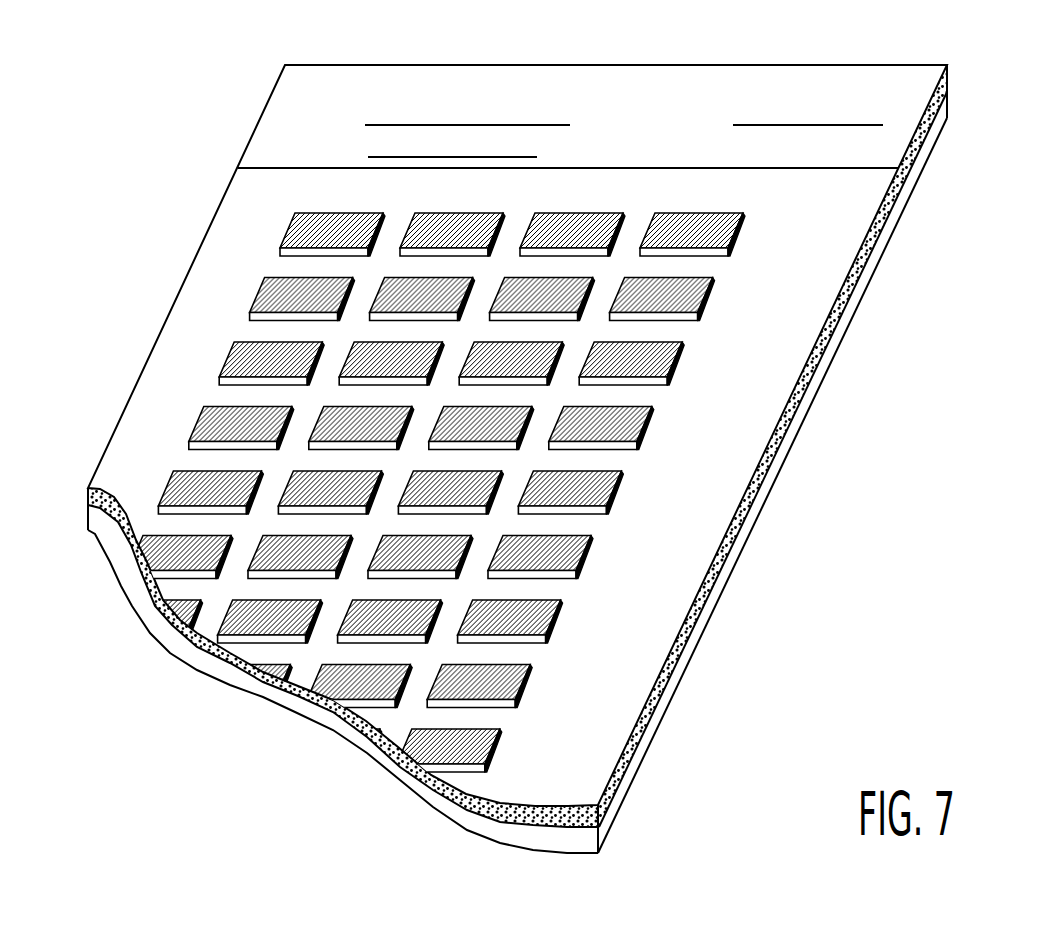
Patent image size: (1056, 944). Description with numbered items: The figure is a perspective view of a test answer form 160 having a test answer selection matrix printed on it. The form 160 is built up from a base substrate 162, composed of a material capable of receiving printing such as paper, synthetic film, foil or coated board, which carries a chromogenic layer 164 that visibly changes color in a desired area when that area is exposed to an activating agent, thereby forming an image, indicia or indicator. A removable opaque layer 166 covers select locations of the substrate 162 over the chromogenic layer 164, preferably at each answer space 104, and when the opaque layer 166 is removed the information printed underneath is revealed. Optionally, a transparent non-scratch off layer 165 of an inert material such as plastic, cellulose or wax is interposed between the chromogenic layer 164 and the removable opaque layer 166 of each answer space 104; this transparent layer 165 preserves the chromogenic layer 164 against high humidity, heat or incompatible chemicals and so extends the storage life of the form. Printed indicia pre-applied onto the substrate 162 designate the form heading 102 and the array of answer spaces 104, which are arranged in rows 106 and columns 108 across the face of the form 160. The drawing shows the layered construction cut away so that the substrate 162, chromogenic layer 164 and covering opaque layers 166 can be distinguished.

The test answer form 160 is at (531, 440).
The form heading 102 is at (268, 63).
The rows 106 is at (215, 165).
The answer space 104 is at (634, 213).
The removable opaque layer 166 is at (737, 242).
The transparent non-scratch off layer 165 is at (708, 398).
The chromogenic layer 164 is at (675, 655).
The base substrate 162 is at (647, 743).
The columns 108 is at (403, 838).